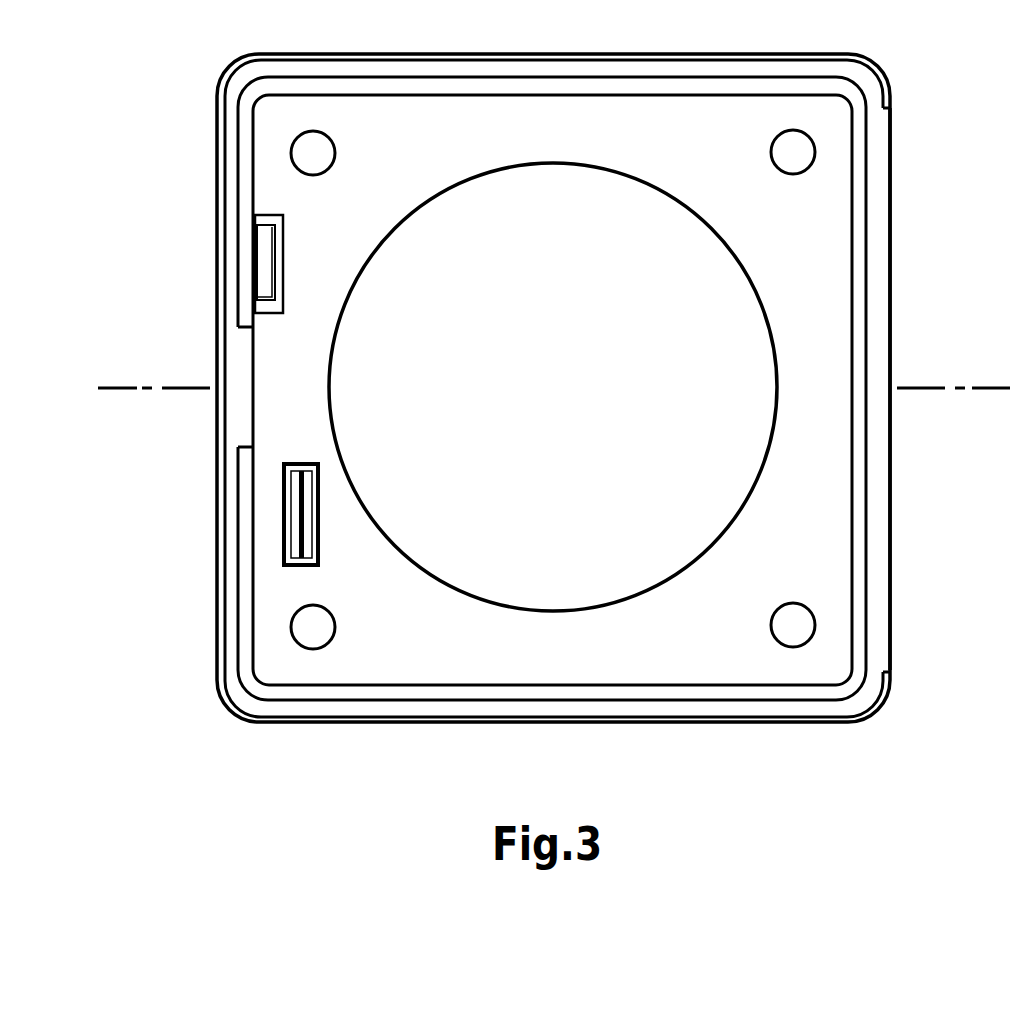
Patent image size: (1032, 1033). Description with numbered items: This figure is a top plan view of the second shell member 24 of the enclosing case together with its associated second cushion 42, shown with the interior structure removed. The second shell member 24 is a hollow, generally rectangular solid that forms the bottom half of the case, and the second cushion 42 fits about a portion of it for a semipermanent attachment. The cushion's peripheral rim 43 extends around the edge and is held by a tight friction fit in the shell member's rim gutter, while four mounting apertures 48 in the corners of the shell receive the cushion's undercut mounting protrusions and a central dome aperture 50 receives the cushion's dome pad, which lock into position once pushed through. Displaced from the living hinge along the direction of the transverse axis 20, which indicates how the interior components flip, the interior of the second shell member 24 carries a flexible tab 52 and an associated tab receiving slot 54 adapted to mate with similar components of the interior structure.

The transverse axis 20 is at (110, 386).
The second shell member 24 is at (235, 654).
The second cushion 42 is at (712, 629).
The peripheral rim 43 is at (892, 680).
The mounting apertures 48 is at (330, 168).
The central dome aperture 50 is at (590, 610).
The flexible tab 52 is at (321, 548).
The tab receiving slot 54 is at (284, 258).